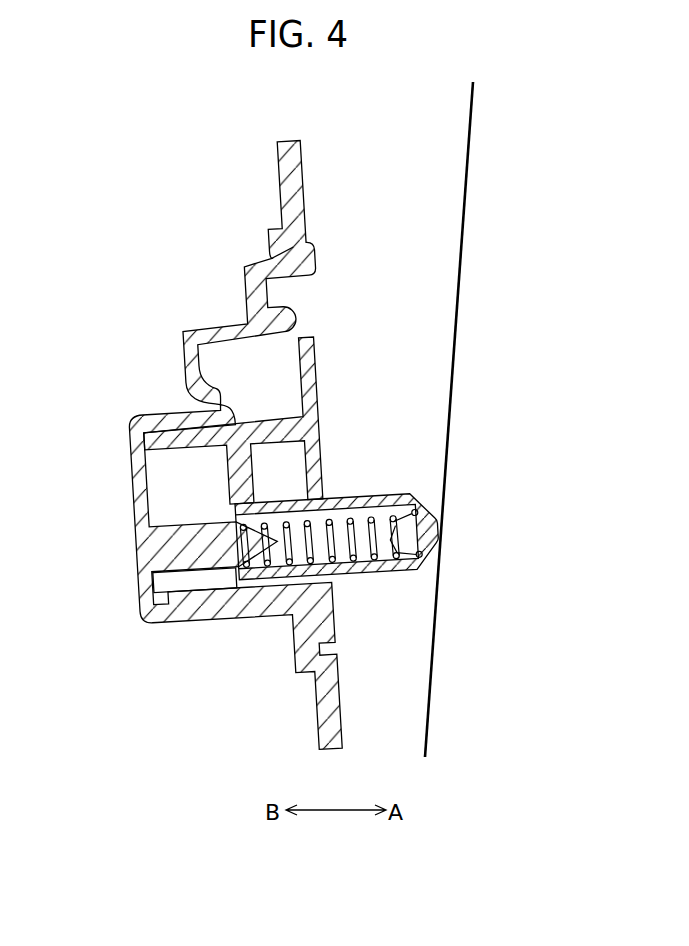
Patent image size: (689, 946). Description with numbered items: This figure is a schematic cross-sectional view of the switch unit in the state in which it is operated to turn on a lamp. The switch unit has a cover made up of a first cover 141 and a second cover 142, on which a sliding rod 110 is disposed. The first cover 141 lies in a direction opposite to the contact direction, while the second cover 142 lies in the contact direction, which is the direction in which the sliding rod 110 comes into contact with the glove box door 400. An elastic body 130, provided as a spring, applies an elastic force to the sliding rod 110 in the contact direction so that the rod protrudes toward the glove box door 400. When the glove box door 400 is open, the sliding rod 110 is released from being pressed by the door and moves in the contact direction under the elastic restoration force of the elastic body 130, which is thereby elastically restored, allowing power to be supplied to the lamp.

The sliding rod 110 is at (389, 495).
The elastic body 130 is at (372, 558).
The first cover 141 is at (140, 542).
The second cover 142 is at (313, 372).
The glove box door 400 is at (453, 376).